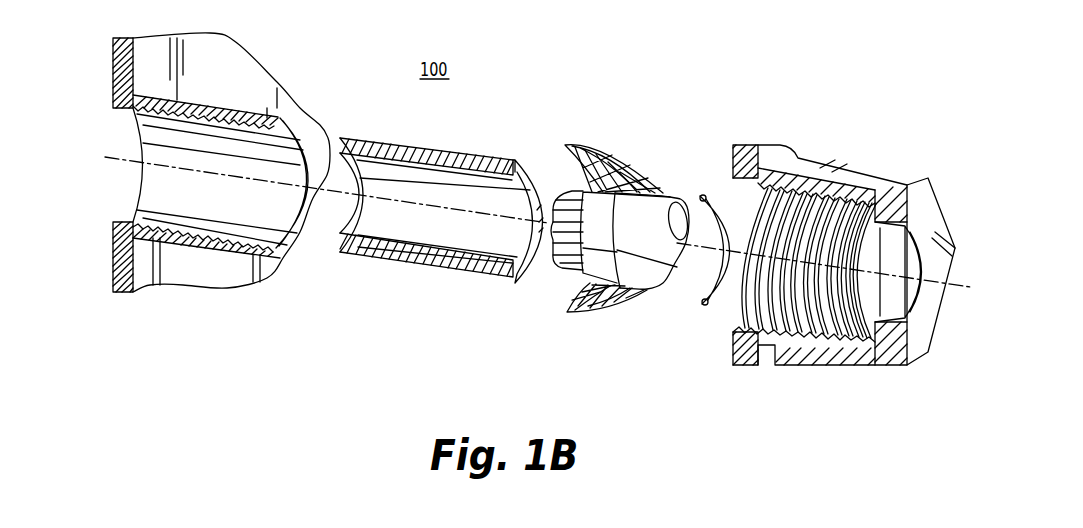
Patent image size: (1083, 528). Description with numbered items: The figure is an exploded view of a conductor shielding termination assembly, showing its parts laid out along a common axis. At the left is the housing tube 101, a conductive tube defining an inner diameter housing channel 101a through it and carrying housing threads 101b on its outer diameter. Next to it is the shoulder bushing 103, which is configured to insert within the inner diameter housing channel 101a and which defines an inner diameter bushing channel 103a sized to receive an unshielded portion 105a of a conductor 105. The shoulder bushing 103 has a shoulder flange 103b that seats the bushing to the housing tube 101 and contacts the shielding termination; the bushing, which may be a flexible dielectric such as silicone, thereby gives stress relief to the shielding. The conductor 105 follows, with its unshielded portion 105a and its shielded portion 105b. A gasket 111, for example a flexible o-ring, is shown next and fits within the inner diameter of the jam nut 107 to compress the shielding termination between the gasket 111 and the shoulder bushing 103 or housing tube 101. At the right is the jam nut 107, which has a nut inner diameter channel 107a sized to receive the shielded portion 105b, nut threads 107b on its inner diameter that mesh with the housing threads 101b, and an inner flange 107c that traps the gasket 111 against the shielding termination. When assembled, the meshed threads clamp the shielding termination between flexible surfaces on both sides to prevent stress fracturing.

The housing tube 101 is at (113, 93).
The inner diameter housing channel 101a is at (150, 186).
The housing threads 101b is at (203, 105).
The shoulder bushing 103 is at (362, 152).
The inner diameter bushing channel 103a is at (463, 240).
The shoulder flange 103b is at (512, 162).
The conductor 105 is at (658, 162).
The unshielded portion 105a is at (620, 163).
The shielded portion 105b is at (658, 280).
The jam nut 107 is at (885, 200).
The nut inner diameter channel 107a is at (923, 243).
The nut threads 107b is at (792, 340).
The inner flange 107c is at (893, 350).
The gasket 111 is at (703, 190).